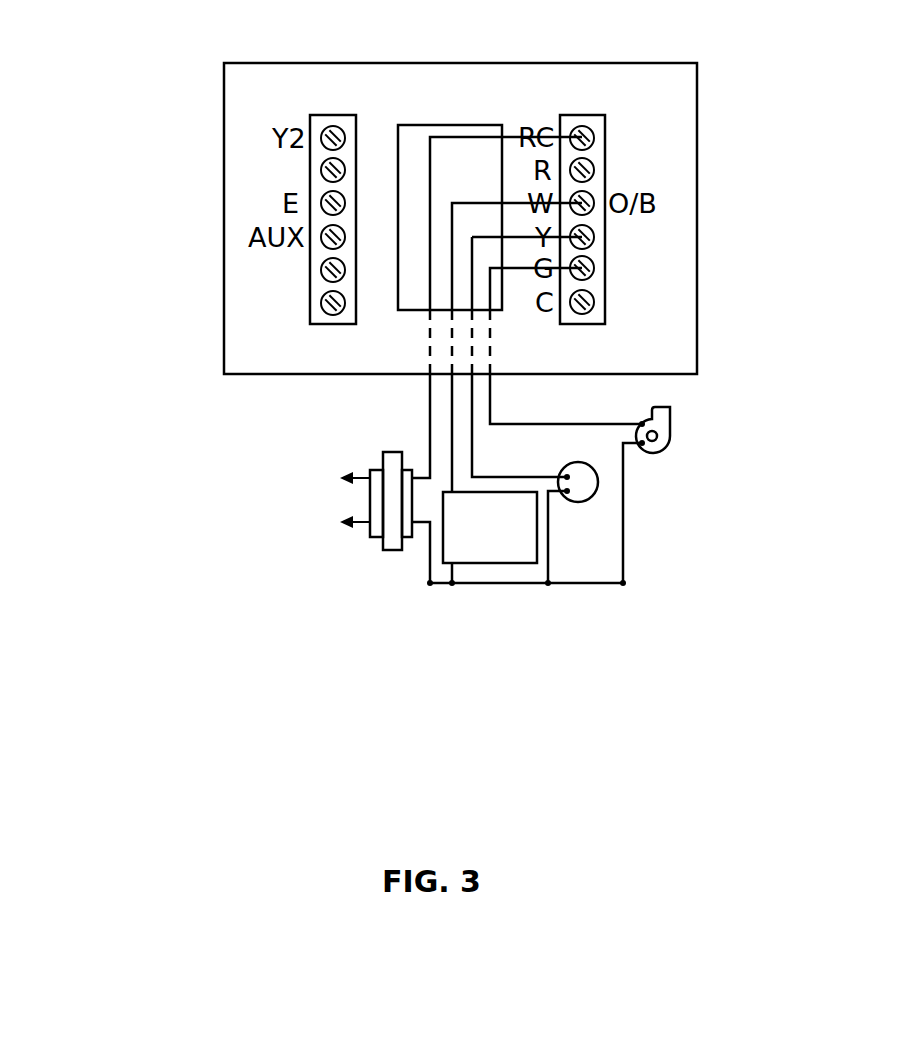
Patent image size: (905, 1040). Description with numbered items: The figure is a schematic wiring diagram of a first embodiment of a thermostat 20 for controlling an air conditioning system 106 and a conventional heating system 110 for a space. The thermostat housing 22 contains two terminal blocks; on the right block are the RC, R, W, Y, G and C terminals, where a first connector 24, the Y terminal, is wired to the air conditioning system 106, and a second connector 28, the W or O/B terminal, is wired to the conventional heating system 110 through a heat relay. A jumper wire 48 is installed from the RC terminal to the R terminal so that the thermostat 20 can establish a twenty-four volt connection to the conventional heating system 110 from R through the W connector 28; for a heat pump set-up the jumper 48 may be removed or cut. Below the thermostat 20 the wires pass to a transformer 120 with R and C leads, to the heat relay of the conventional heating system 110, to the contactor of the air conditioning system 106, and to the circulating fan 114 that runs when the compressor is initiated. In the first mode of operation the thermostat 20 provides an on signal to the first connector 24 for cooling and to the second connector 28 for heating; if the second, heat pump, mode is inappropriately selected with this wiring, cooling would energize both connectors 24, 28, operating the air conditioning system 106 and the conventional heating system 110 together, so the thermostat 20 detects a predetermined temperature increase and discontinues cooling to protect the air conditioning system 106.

The thermostat 20 is at (148, 138).
The thermostat 22 is at (697, 333).
The first connector 24 is at (594, 237).
The second connector 28 is at (592, 196).
The jumper wire 48 is at (563, 155).
The air conditioning system 106 is at (595, 497).
The conventional heating system 110 is at (473, 563).
The circulating fan 114 is at (668, 448).
The transformer 120 is at (373, 537).